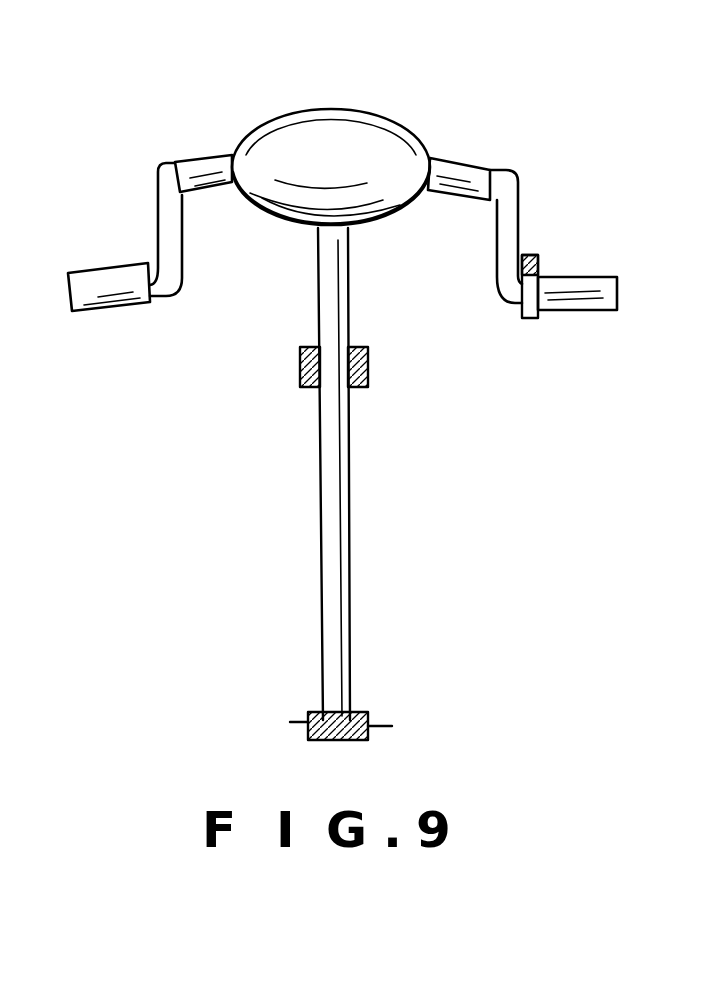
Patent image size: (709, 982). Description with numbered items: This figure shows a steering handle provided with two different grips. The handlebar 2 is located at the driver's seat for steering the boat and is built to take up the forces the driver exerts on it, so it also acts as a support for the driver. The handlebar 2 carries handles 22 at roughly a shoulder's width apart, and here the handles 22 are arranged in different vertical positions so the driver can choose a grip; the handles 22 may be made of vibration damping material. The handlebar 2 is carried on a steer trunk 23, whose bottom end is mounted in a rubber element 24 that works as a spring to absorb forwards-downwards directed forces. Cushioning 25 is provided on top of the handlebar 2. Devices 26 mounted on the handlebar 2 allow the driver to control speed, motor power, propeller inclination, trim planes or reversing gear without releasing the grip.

The handlebar 2 is at (522, 200).
The grips/handles 22 is at (458, 162).
The steer trunk 23 is at (337, 468).
The rubber element 24 is at (360, 712).
The cushioning 25 is at (340, 135).
The devices 26 is at (530, 318).